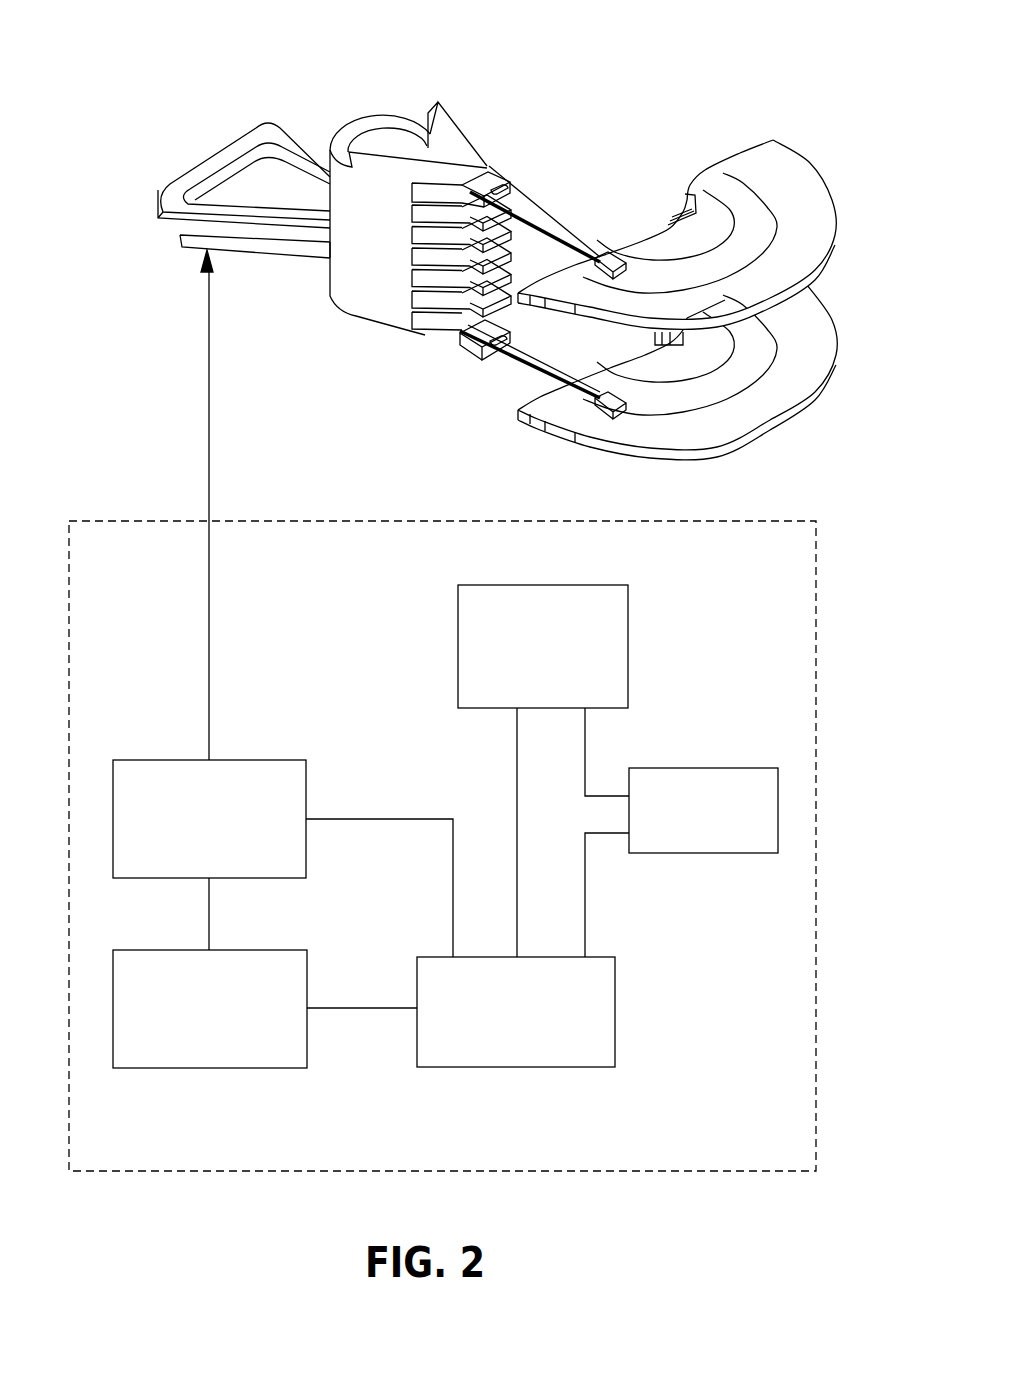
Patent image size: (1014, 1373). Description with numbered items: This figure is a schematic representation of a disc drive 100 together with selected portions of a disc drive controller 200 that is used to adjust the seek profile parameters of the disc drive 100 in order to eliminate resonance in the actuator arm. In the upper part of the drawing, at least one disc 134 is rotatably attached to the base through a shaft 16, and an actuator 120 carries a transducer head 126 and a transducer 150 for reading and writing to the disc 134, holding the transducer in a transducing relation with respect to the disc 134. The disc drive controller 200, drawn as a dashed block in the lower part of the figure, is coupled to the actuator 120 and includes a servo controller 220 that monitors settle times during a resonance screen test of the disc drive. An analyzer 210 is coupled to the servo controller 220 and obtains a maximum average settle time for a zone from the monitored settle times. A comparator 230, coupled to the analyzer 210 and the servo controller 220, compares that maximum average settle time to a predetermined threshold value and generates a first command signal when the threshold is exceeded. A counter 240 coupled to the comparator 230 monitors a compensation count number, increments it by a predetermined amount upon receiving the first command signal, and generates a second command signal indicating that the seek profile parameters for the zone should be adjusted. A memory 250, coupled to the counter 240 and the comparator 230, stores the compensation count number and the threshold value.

The disc drive 100 is at (97, 82).
The actuator 120 is at (467, 128).
The disc 134 is at (788, 158).
The shaft 16 is at (685, 202).
The transducer head 126 is at (610, 274).
The transducer 150 is at (616, 254).
The disc drive controller 200 is at (383, 519).
The servo controller 220 is at (259, 759).
The memory 250 is at (591, 584).
The counter 240 is at (732, 767).
The analyzer 210 is at (267, 949).
The comparator 230 is at (617, 1011).